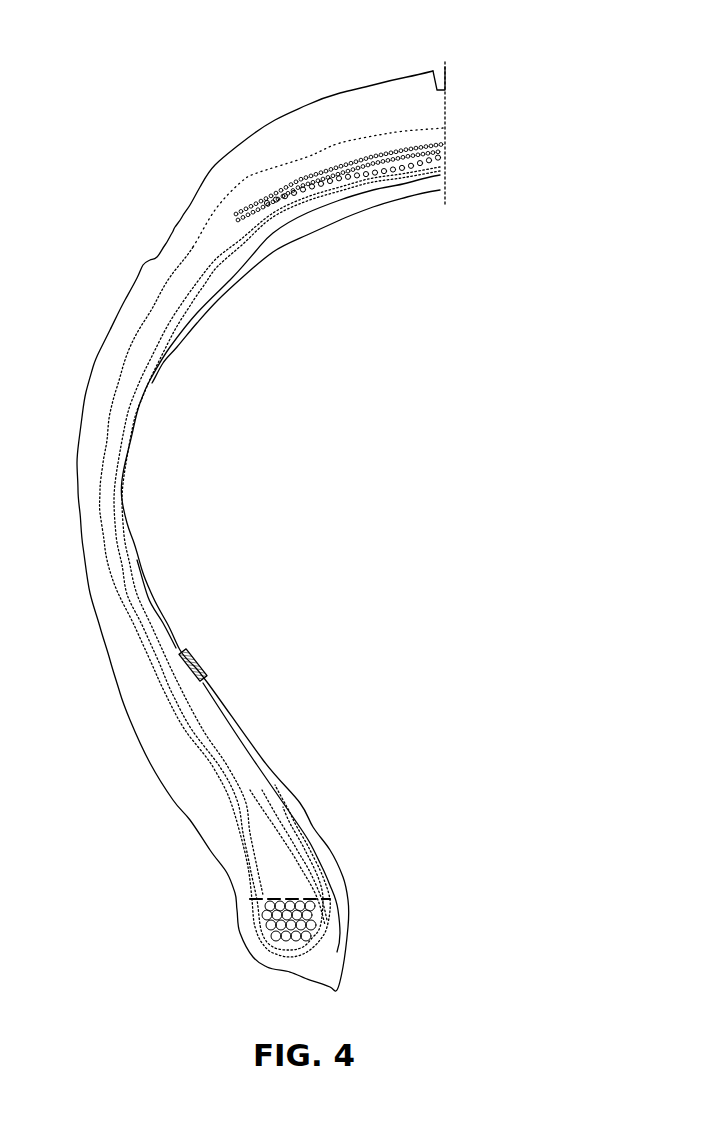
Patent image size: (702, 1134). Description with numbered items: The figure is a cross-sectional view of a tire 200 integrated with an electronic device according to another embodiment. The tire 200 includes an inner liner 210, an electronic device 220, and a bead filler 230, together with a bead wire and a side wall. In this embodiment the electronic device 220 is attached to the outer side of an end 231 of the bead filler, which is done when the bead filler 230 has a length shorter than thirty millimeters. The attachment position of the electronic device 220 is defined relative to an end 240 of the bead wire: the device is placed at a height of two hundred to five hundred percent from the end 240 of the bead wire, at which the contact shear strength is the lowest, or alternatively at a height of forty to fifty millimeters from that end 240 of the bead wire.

The tire 200 is at (478, 88).
The inner liner 210 is at (265, 760).
The electronic device 220 is at (195, 652).
The bead filler 230 is at (275, 862).
The end of the bead filler 231 is at (220, 772).
The end of the bead wire 240 is at (320, 927).